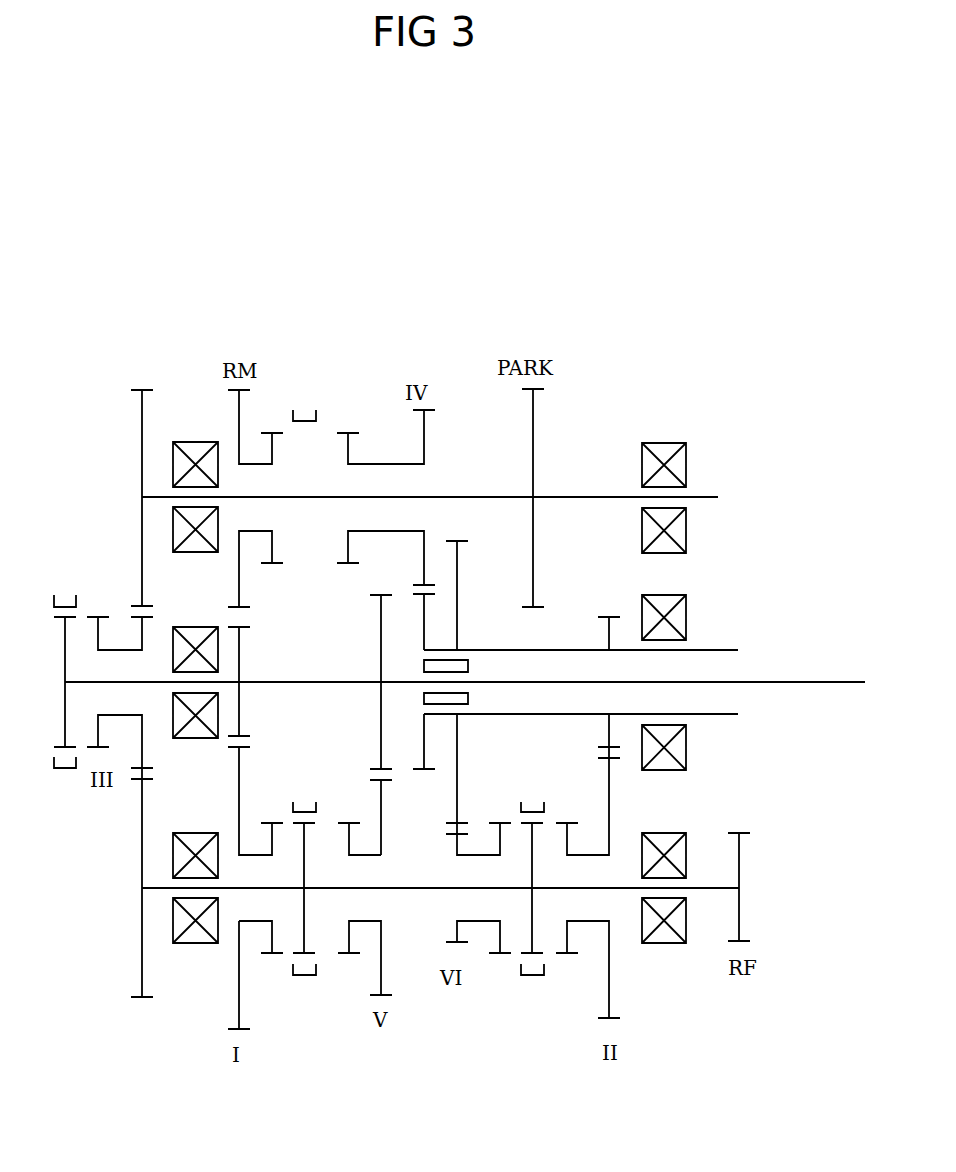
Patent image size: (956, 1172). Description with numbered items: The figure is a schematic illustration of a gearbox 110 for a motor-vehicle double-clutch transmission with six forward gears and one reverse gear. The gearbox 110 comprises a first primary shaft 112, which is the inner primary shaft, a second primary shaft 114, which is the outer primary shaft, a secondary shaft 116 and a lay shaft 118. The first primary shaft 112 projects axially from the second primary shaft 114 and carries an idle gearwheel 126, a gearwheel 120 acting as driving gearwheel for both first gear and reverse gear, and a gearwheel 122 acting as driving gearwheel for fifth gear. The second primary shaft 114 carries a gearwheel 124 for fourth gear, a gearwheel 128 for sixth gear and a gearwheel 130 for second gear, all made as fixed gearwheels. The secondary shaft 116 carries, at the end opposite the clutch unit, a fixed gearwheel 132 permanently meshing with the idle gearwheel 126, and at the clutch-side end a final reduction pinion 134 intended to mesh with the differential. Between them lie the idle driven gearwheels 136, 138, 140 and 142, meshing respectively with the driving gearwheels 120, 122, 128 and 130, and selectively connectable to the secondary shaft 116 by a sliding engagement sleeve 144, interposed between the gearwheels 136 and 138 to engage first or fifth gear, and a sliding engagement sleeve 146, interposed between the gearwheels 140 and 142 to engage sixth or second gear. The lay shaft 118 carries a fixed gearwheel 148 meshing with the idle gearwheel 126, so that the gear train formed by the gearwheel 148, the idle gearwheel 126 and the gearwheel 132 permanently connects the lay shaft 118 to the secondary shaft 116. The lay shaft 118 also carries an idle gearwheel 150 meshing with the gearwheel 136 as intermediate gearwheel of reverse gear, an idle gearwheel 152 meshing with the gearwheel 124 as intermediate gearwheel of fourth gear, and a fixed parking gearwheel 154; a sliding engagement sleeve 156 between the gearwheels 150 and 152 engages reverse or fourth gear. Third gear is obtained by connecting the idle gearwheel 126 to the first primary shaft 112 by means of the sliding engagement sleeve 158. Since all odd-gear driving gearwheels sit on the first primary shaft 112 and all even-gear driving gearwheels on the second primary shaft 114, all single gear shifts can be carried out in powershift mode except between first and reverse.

The gearbox 110 is at (170, 250).
The first primary shaft 112 is at (308, 686).
The second primary shaft 114 is at (518, 716).
The secondary shaft 116 is at (703, 890).
The lay shaft 118 is at (606, 496).
The gearwheel 120 is at (242, 670).
The gearwheel 122 is at (381, 651).
The gearwheel 124 is at (425, 772).
The idle gearwheel 126 is at (140, 633).
The gearwheel 128 is at (460, 541).
The gearwheel 130 is at (608, 612).
The gearwheel 132 is at (147, 1000).
The final reduction pinion 134 is at (745, 830).
The gearwheel 136 is at (243, 1030).
The gearwheel 138 is at (383, 975).
The gearwheel 140 is at (462, 945).
The gearwheel 142 is at (618, 1020).
The sliding engagement sleeve 144 is at (316, 972).
The sliding engagement sleeve 146 is at (520, 972).
The gearwheel 148 is at (137, 388).
The gearwheel 150 is at (239, 417).
The gearwheel 152 is at (432, 408).
The parking gearwheel 154 is at (535, 423).
The sliding engagement sleeve 156 is at (317, 416).
The sliding engagement sleeve 158 is at (55, 762).